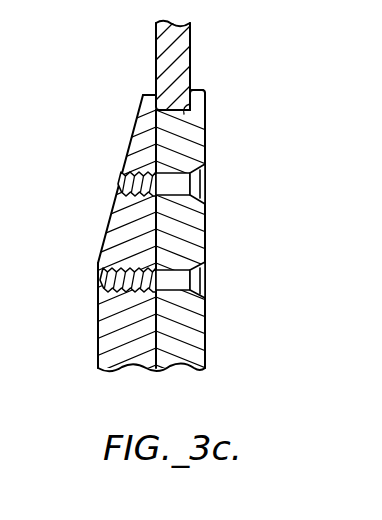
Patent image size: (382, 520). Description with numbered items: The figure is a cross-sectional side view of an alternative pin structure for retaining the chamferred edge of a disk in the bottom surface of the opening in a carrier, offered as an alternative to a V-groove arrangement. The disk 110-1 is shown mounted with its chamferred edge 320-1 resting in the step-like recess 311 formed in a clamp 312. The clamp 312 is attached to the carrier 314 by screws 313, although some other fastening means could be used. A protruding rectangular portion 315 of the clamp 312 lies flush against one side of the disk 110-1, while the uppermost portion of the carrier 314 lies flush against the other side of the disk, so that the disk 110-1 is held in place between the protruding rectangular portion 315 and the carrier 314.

The disk 110-1 is at (189, 45).
The protruding rectangular portion 315 is at (197, 90).
The chamferred edge 320-1 is at (187, 108).
The step-like recess 311 is at (200, 124).
The clamp 312 is at (203, 343).
The screws 313 is at (203, 181).
The carrier 314 is at (114, 227).